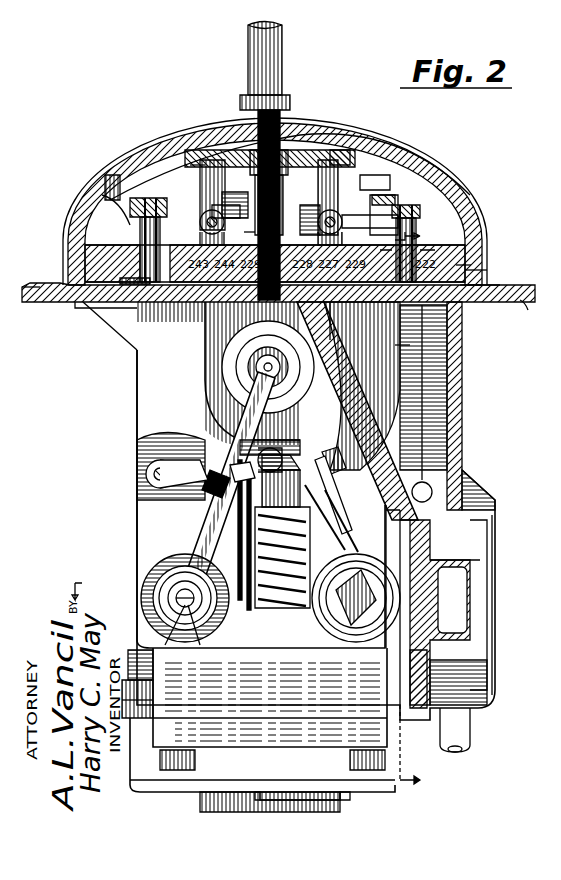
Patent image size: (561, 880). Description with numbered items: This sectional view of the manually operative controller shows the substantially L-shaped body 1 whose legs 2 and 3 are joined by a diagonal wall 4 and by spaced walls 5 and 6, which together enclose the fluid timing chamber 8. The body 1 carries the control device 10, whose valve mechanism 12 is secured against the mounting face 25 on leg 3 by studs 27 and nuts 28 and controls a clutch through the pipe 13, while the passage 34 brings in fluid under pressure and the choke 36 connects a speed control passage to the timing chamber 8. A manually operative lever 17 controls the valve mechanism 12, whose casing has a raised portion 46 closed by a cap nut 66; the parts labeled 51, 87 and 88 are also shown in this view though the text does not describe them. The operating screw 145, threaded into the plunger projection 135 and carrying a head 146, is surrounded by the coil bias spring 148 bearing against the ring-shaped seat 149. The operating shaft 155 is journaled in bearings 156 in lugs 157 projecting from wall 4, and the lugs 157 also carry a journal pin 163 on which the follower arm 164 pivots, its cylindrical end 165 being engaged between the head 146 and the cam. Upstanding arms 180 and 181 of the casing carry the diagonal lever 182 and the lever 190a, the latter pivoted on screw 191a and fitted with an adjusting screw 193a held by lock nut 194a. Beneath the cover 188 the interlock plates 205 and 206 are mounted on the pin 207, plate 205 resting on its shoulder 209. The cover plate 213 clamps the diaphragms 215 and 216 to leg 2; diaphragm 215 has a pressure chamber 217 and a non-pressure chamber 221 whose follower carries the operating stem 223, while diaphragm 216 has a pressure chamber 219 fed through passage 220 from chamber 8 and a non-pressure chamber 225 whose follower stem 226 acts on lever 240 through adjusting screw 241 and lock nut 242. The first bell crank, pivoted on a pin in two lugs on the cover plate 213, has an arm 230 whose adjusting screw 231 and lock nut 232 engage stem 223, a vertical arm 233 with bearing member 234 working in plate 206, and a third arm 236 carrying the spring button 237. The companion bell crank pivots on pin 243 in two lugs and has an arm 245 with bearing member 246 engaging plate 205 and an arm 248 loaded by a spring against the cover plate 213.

The body 1 is at (526, 316).
The leg 2 is at (78, 305).
The leg 3 is at (462, 402).
The diagonal wall 4 is at (340, 398).
The wall 5 is at (474, 369).
The wall 6 is at (76, 584).
The fluid timing chamber 8 is at (430, 350).
The control device 10 is at (158, 622).
The valve mechanism 12 is at (165, 730).
The pipe 13 is at (462, 734).
The lever 17 is at (250, 52).
The mounting face 25 is at (412, 665).
The stud 27 is at (150, 668).
The nut 28 is at (150, 690).
The passage 34 is at (458, 590).
The choke 36 is at (440, 492).
The raised portion 46 is at (155, 580).
The cylinder 51 is at (352, 628).
The cap nut 66 is at (160, 568).
The bottom fitting 87 is at (255, 796).
The bolt 88 is at (360, 762).
The plunger projection 135 is at (320, 538).
The operating screw 145 is at (240, 480).
The head 146 is at (296, 478).
The coil bias spring 148 is at (288, 608).
The ring-shaped seat 149 is at (340, 494).
The operating shaft 155 is at (248, 373).
The bearing 156 is at (236, 358).
The lug 157 is at (230, 330).
The journal pin 163 is at (140, 462).
The follower arm 164 is at (146, 478).
The arm end 165 is at (270, 448).
The upstanding arm 180 is at (342, 470).
The upstanding arm 181 is at (238, 548).
The lever 182 is at (340, 552).
The cover 188 is at (82, 218).
The lever 190a is at (208, 528).
The screw 191a is at (205, 492).
The adjusting screw 193a is at (176, 635).
The lock nut 194a is at (205, 635).
The plate 205 is at (232, 150).
The plate 206 is at (322, 160).
The pin 207 is at (244, 233).
The shoulder 209 is at (218, 162).
The cover plate 213 is at (470, 252).
The diaphragm 215 is at (470, 287).
The diaphragm 216 is at (68, 286).
The pressure chamber 217 is at (383, 344).
The pressure chamber 219 is at (112, 318).
The passage 220 is at (340, 321).
The non-pressure chamber 221 is at (476, 272).
The operating stem 223 is at (420, 232).
The non-pressure chamber 225 is at (128, 278).
The stem 226 is at (140, 242).
The arm 230 is at (355, 214).
The adjusting screw 231 is at (412, 218).
The lock nut 232 is at (385, 196).
The arm 233 is at (372, 175).
The bearing member 234 is at (338, 150).
The arm 236 is at (300, 205).
The button 237 is at (316, 227).
The lever 240 is at (200, 210).
The adjusting screw 241 is at (128, 222).
The lock nut 242 is at (112, 178).
The pin 243 is at (112, 263).
The arm 245 is at (150, 162).
The bearing member 246 is at (200, 165).
The arm 248 is at (238, 214).